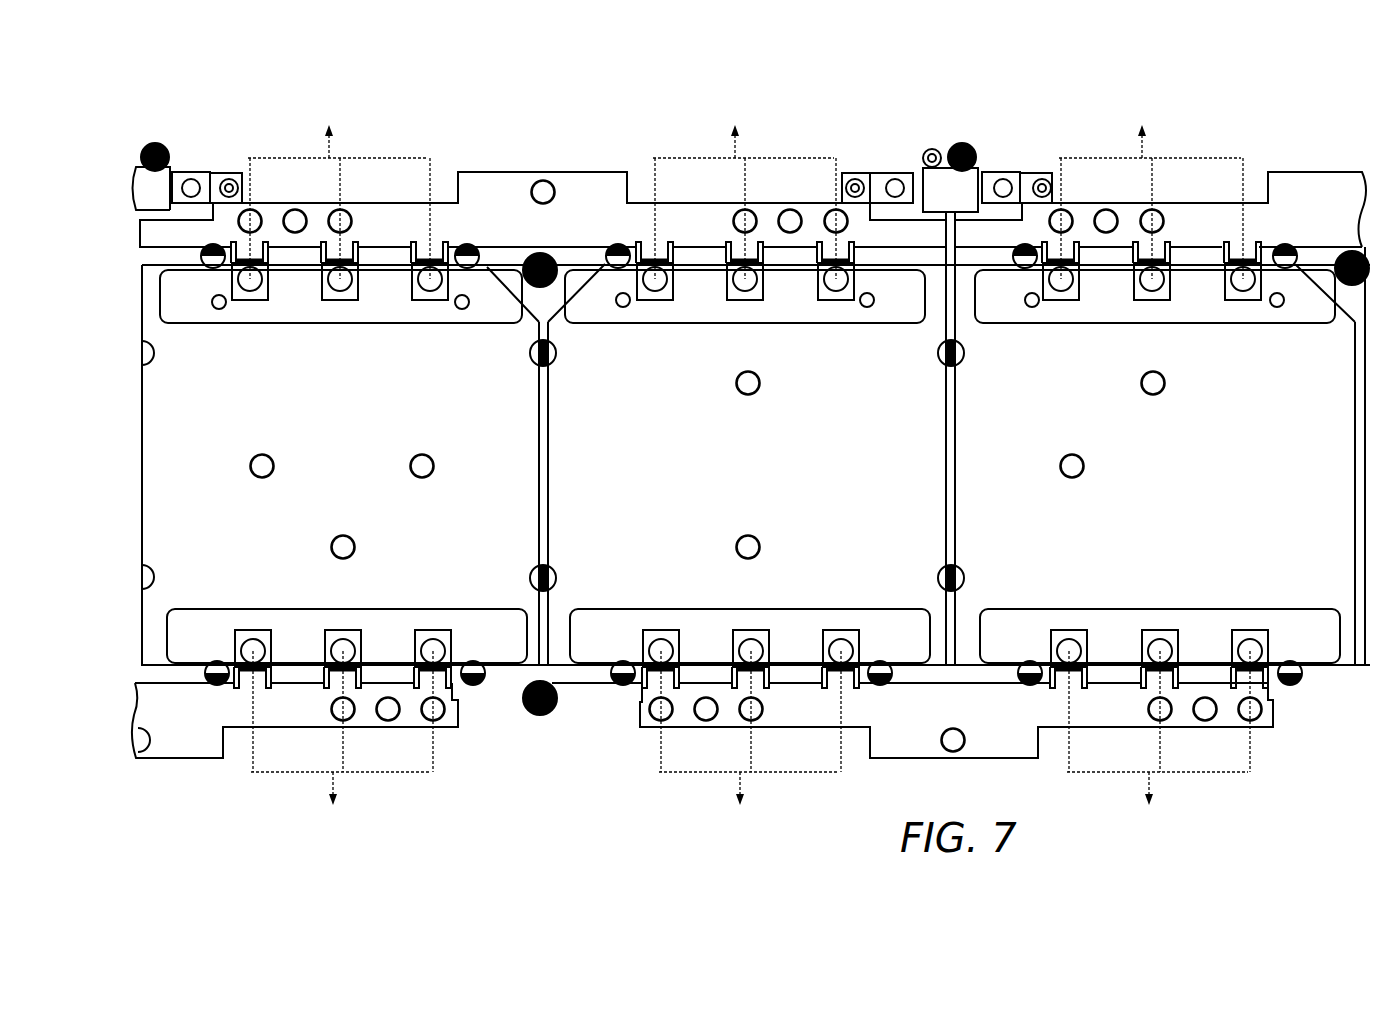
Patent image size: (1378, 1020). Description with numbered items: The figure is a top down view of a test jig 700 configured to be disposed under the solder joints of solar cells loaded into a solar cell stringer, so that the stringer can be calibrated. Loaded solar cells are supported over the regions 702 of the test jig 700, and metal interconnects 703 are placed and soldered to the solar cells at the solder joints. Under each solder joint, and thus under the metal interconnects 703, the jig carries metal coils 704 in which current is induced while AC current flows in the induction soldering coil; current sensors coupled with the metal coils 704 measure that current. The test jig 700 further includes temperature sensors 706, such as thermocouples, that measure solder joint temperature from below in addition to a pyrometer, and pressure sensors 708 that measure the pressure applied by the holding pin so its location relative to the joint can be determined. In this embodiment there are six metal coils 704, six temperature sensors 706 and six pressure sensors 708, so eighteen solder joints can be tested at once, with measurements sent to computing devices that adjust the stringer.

The test jig 700 is at (197, 88).
The regions 702 is at (143, 452).
The metal interconnects 703 is at (1252, 218).
The metal coils 704 is at (430, 292).
The temperature sensors 706 is at (836, 292).
The pressure sensors 708 is at (1243, 292).